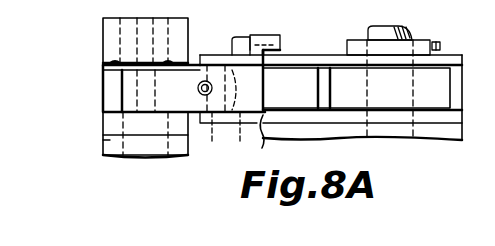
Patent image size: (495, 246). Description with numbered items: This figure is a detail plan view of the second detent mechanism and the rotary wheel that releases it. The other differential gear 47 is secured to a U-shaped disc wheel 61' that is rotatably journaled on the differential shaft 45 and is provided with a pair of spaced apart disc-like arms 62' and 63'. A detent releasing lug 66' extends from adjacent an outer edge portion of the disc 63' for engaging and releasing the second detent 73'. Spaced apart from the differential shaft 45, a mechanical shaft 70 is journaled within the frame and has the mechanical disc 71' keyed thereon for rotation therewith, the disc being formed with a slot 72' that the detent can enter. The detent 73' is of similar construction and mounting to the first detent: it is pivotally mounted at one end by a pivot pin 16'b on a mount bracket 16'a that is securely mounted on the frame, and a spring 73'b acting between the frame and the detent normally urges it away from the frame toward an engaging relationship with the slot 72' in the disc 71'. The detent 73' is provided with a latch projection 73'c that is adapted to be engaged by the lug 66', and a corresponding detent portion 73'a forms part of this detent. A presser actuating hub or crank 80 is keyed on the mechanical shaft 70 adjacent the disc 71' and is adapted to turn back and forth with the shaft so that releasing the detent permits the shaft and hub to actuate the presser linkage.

The mount bracket 16'a is at (101, 40).
The pivot pin 16'b is at (128, 57).
The second detent 73' is at (178, 81).
The mechanical disc 71' is at (208, 95).
The presser actuating hub 80 is at (103, 143).
The mechanical shaft 70 is at (124, 150).
The spring 73'b is at (197, 88).
The disc-like arm 63' is at (331, 43).
The detent releasing lug 66' is at (262, 34).
The latch projection 73'c is at (288, 41).
The differential shaft 45 is at (406, 30).
The U-shaped disc wheel 61' is at (374, 90).
The slot 72' is at (226, 132).
The detent end 73'a is at (230, 141).
The disc-like arm 62' is at (274, 140).
The differential gear 47 is at (333, 138).